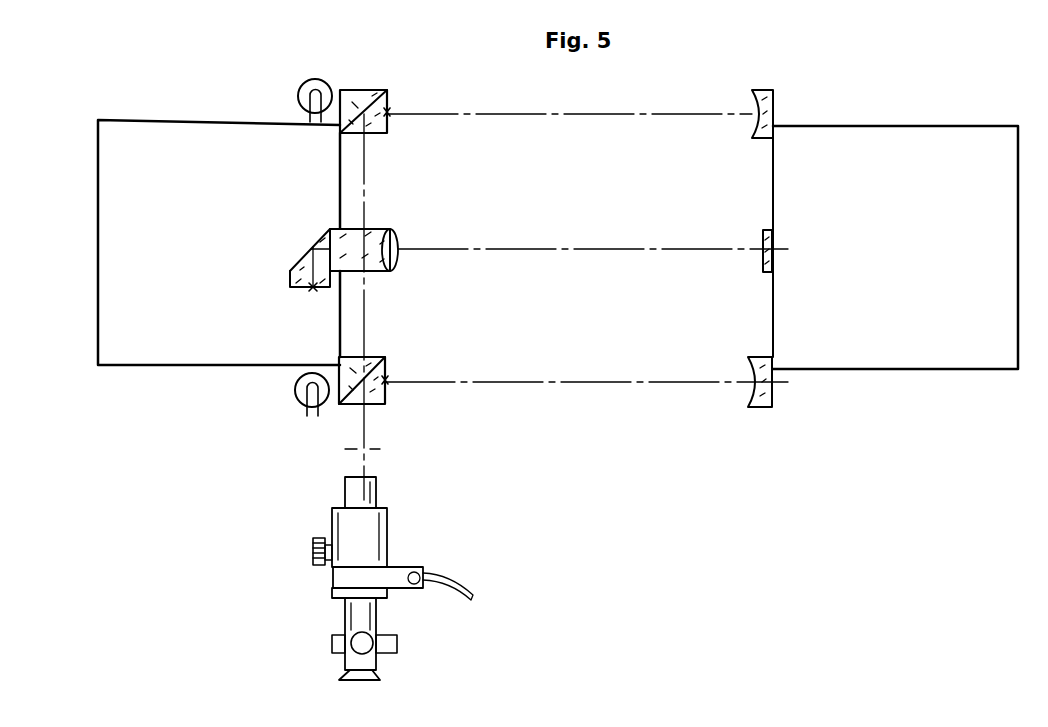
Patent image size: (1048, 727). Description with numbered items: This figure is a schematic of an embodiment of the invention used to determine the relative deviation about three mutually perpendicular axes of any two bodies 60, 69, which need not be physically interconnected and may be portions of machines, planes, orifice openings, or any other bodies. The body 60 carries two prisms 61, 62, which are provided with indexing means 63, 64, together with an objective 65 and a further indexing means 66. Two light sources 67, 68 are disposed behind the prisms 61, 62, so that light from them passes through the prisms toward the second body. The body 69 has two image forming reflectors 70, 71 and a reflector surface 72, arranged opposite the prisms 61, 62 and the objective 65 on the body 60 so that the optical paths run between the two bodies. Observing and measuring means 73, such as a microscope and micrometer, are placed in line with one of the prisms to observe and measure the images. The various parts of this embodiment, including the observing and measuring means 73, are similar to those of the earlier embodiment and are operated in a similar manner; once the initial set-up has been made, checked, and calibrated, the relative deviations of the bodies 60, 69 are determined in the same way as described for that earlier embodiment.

The body 60 is at (118, 205).
The prism 61 is at (372, 402).
The prism 62 is at (390, 102).
The indexing means 63 is at (388, 382).
The indexing means 64 is at (391, 112).
The objective 65 is at (396, 250).
The indexing means 66 is at (313, 288).
The light source 67 is at (302, 400).
The light source 68 is at (300, 90).
The body 69 is at (912, 143).
The image forming reflector 70 is at (752, 407).
The image forming reflector 71 is at (758, 92).
The reflector surface 72 is at (763, 245).
The observing and measuring means 73 is at (378, 618).